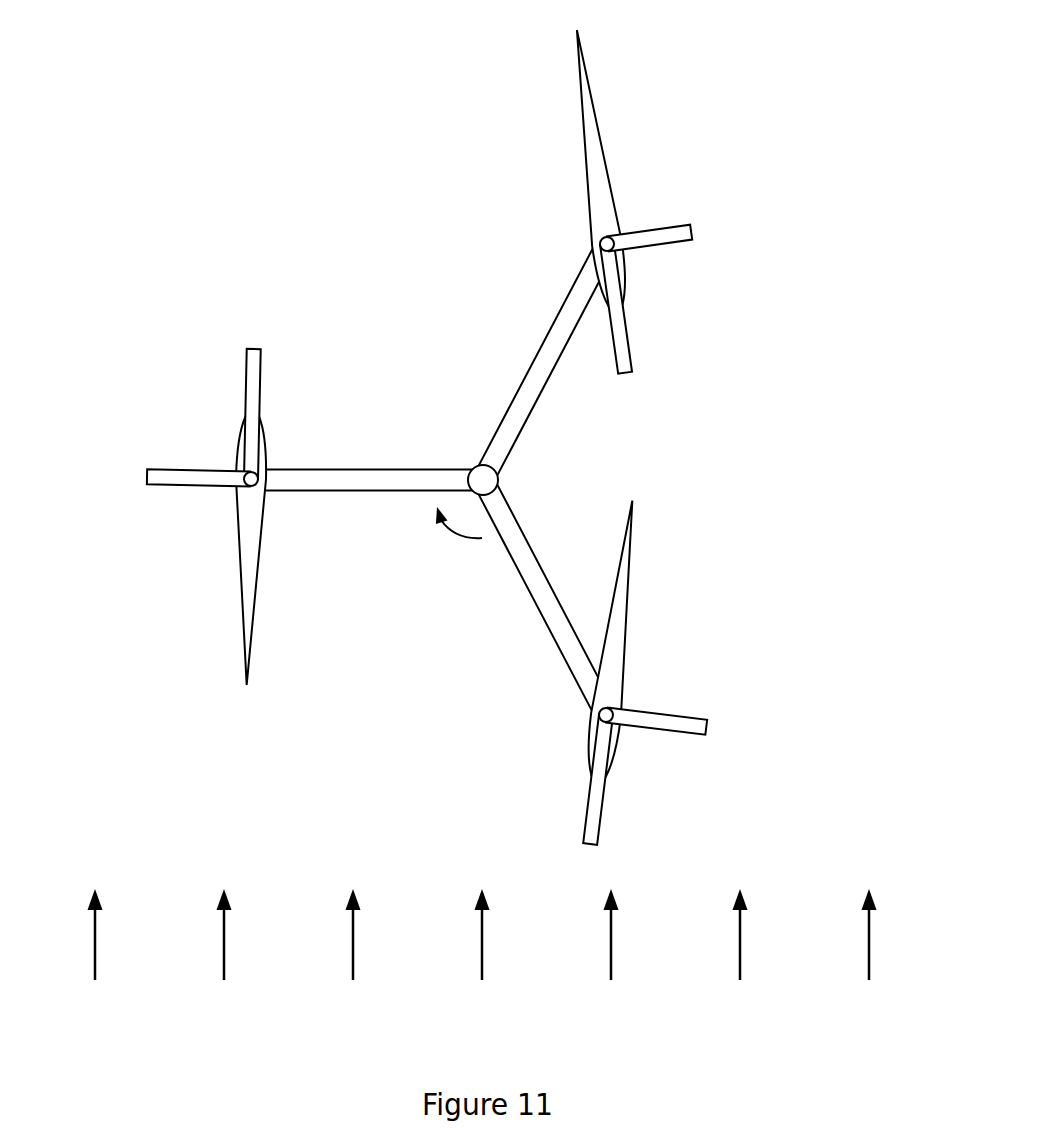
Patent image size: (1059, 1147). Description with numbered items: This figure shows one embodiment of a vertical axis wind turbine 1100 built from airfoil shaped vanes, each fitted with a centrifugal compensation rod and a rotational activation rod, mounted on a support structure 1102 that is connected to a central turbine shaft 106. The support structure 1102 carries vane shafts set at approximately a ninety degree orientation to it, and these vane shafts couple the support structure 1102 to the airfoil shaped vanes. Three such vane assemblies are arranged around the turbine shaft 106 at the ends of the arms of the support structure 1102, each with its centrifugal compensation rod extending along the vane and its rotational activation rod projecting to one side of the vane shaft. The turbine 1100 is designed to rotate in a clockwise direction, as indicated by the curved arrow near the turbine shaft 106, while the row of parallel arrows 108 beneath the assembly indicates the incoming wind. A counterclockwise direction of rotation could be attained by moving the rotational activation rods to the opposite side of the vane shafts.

The wind turbine system 1100 is at (213, 84).
The support structure 1102 is at (543, 393).
The turbine shaft 106 is at (468, 472).
The wind direction arrows 108 is at (741, 925).